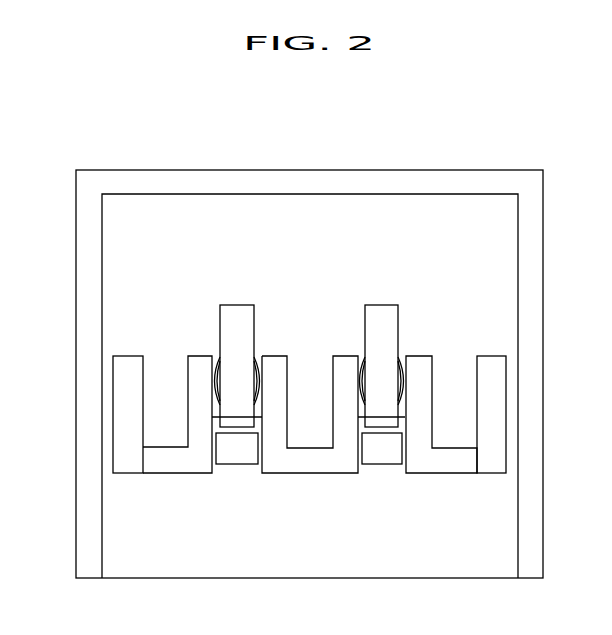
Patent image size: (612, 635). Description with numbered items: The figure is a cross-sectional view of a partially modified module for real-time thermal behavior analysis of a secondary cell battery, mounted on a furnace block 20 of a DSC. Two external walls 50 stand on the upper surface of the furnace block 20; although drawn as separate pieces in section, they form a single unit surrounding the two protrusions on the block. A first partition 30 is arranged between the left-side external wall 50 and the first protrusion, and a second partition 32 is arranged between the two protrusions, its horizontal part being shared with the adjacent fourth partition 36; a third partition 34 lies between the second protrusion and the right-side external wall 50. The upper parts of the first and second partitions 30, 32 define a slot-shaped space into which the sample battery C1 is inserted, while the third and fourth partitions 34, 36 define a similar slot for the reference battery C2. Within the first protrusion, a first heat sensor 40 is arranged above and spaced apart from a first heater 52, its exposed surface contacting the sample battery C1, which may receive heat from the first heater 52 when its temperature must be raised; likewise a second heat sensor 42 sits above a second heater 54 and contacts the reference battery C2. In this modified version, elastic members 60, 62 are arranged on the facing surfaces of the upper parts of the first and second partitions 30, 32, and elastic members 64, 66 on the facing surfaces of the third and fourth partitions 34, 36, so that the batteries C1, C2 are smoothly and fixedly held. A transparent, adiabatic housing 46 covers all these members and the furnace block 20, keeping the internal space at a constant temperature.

The furnace block 20 is at (459, 563).
The first partition 30 is at (197, 375).
The second partition 32 is at (273, 368).
The third partition 34 is at (425, 377).
The fourth partition 36 is at (339, 363).
The first heat sensor 40 is at (238, 422).
The second heat sensor 42 is at (383, 423).
The housing 46 is at (410, 176).
The external walls 50 is at (125, 455).
The first heater 52 is at (232, 458).
The second heater 54 is at (375, 458).
The elastic member 60 is at (217, 352).
The elastic member 62 is at (257, 352).
The elastic member 64 is at (404, 350).
The elastic member 66 is at (361, 352).
The sample battery C1 is at (237, 315).
The reference battery C2 is at (383, 312).